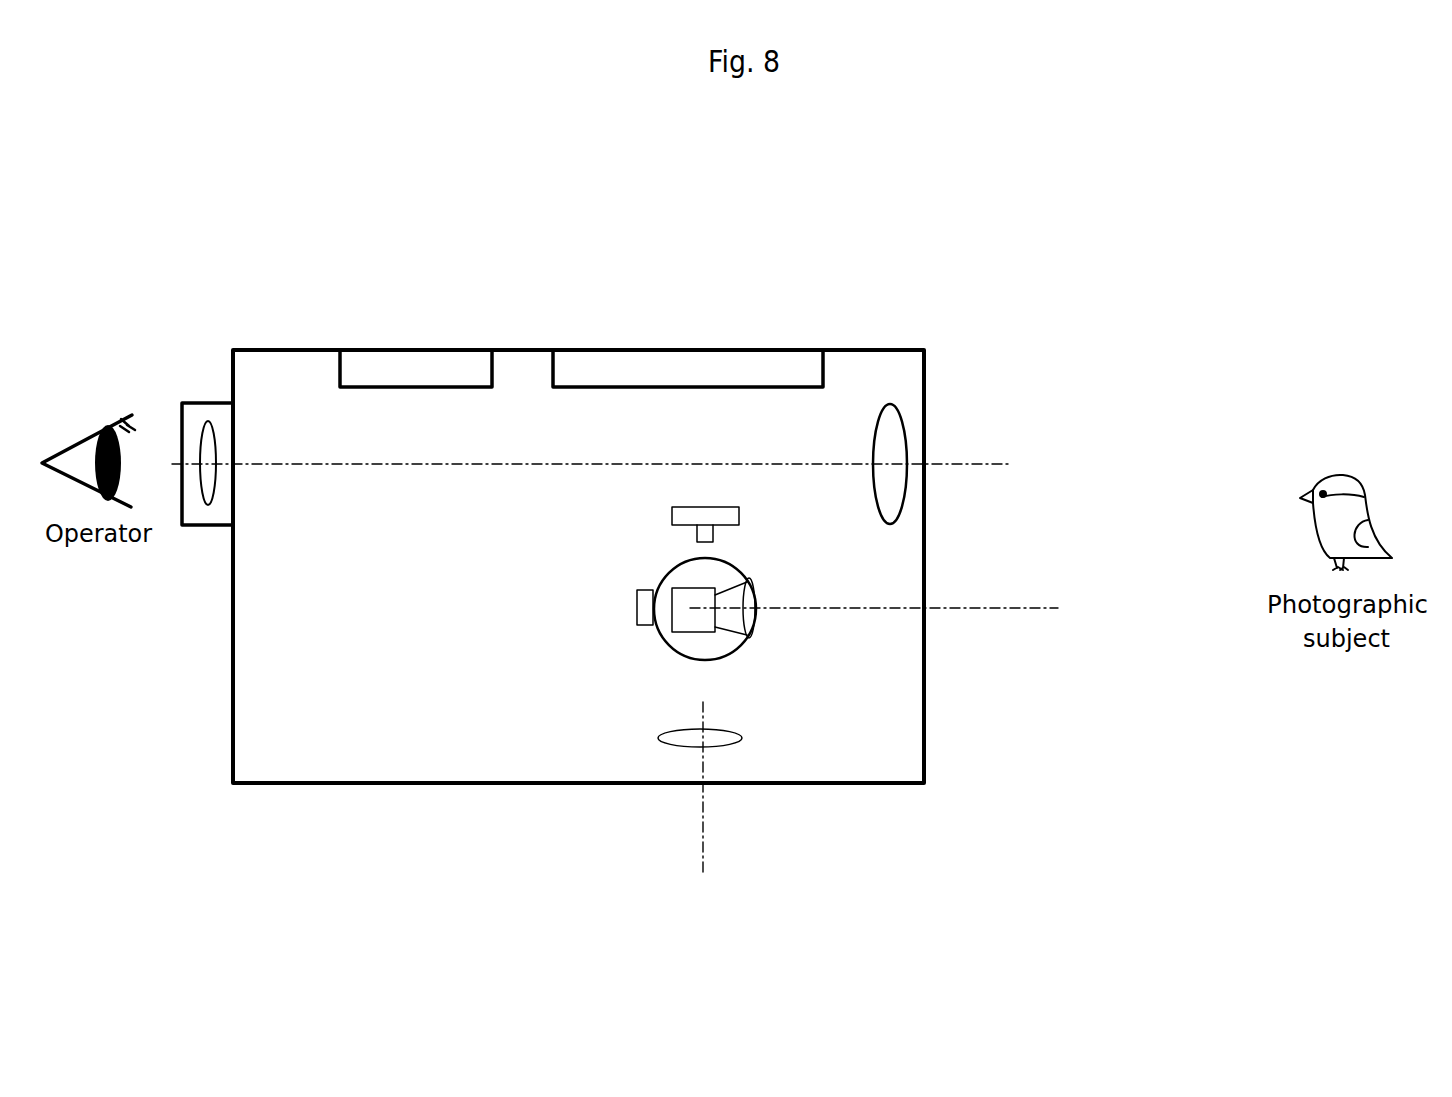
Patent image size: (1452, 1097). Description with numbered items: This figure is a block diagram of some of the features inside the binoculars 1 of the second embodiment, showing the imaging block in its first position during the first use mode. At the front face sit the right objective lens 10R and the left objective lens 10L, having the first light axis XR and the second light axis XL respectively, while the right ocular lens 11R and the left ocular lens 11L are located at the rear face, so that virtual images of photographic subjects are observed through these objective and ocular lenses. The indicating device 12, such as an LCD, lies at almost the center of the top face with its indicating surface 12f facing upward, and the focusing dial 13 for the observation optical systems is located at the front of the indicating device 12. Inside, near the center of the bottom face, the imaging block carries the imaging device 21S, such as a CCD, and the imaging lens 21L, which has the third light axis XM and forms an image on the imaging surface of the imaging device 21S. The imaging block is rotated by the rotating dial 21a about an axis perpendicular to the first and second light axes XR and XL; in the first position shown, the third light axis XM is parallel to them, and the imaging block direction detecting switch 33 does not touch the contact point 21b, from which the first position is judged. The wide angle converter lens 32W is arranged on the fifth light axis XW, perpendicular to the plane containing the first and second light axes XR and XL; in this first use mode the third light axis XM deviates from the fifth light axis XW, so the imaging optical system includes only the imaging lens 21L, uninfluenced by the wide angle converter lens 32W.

The binoculars 1 is at (927, 352).
The right objective lens 10R is at (1004, 489).
The left objective lens 10L is at (908, 491).
The right ocular lens 11R is at (157, 526).
The left ocular lens 11L is at (203, 497).
The indicating device 12 is at (637, 368).
The indicating surface 12f is at (762, 352).
The focusing dial 13 is at (447, 300).
The rotating dial 21a is at (658, 638).
The contact point 21b is at (637, 602).
The imaging lens 21L is at (740, 572).
The imaging device 21S is at (695, 608).
The wide angle converter lens 32W is at (742, 738).
The imaging block direction detecting switch 33 is at (672, 521).
The first light axis XR is at (660, 412).
The second light axis XL is at (981, 465).
The third light axis XM is at (1051, 607).
The fifth light axis XW is at (705, 828).